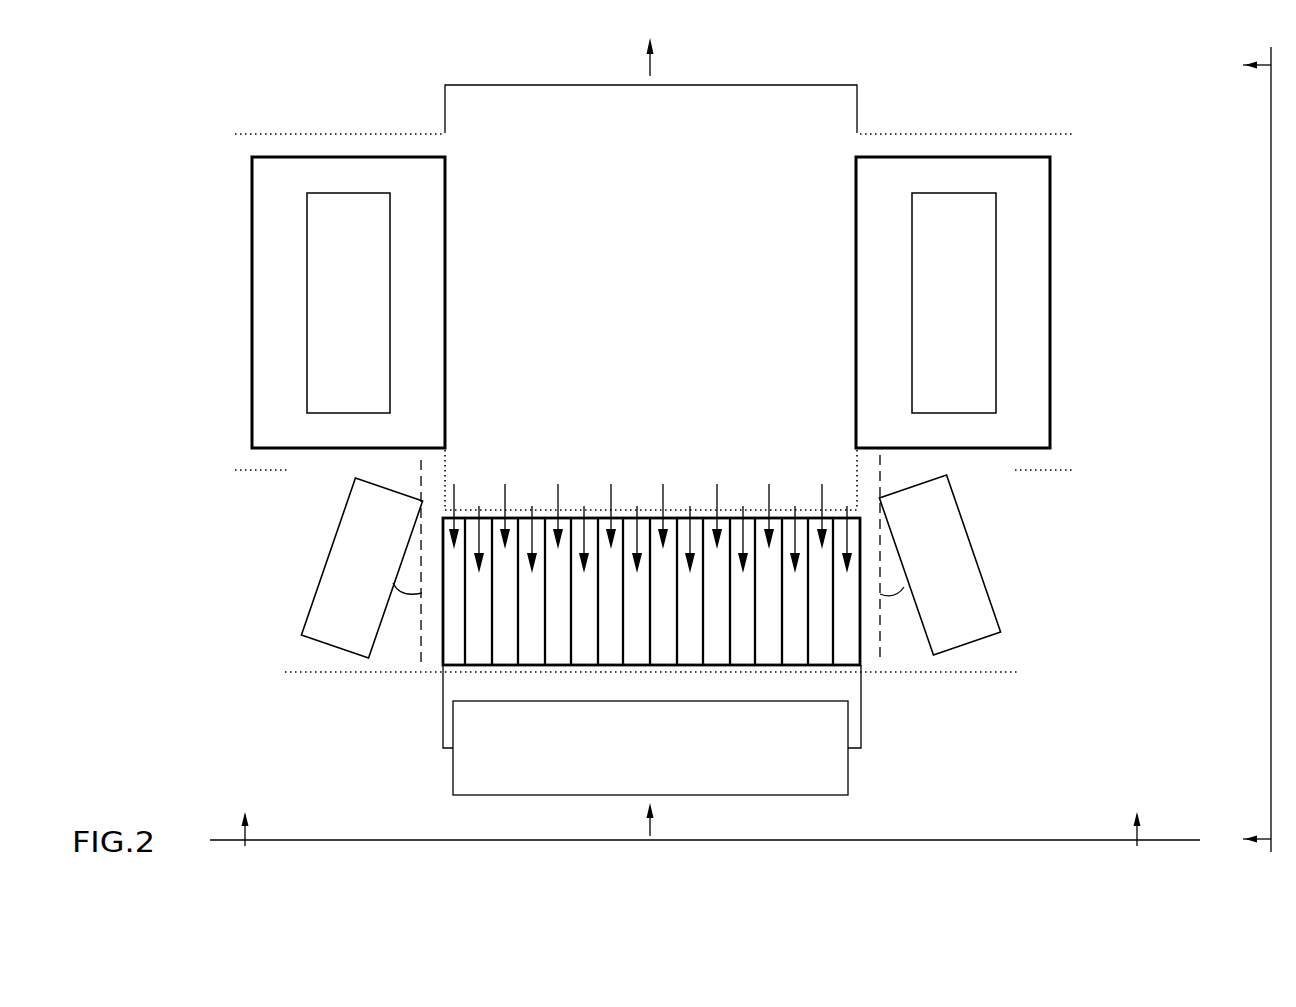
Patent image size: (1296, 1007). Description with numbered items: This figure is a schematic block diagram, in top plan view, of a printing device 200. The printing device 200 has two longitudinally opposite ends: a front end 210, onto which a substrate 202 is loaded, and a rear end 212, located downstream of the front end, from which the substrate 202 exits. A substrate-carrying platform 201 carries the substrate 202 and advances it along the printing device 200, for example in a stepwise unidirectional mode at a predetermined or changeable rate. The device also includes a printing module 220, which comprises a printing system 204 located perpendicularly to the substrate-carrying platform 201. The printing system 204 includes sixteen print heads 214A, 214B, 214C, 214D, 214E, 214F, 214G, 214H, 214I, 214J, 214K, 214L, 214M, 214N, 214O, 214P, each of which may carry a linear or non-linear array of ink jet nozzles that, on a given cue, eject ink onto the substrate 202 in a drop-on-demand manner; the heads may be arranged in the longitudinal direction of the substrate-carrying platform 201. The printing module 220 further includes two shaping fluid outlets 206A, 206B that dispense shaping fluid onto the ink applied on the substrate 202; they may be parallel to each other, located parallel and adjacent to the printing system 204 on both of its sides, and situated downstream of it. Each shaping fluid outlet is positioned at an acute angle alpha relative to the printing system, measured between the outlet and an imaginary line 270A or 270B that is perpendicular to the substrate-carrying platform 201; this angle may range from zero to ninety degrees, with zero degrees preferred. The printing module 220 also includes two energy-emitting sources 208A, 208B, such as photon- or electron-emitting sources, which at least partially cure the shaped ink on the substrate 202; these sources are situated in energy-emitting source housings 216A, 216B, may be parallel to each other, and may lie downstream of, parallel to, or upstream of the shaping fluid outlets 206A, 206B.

The printing device 200 is at (1133, 131).
The substrate-carrying platform 201 is at (697, 100).
The substrate 202 is at (822, 769).
The printing system 204 is at (475, 667).
The shaping fluid outlet 206A is at (971, 548).
The shaping fluid outlet 206B is at (338, 531).
The energy-emitting source 208A is at (996, 249).
The energy-emitting source 208B is at (307, 253).
The front end 210 is at (650, 826).
The rear end 212 is at (650, 61).
The print head 214A is at (447, 484).
The print head 214B is at (476, 506).
The print head 214C is at (498, 484).
The print head 214D is at (529, 506).
The print head 214E is at (551, 483).
The print head 214F is at (581, 506).
The print head 214G is at (604, 484).
The print head 214H is at (634, 506).
The print head 214I is at (655, 488).
The print head 214J is at (687, 507).
The print head 214K is at (710, 483).
The print head 214L is at (740, 507).
The print head 214M is at (762, 483).
The print head 214N is at (792, 506).
The print head 214O is at (815, 484).
The print head 214P is at (844, 506).
The energy-emitting source housing 216A is at (1050, 331).
The energy-emitting source housing 216B is at (252, 334).
The printing module 220 is at (962, 131).
The imaginary line 270A is at (885, 633).
The imaginary line 270B is at (413, 650).